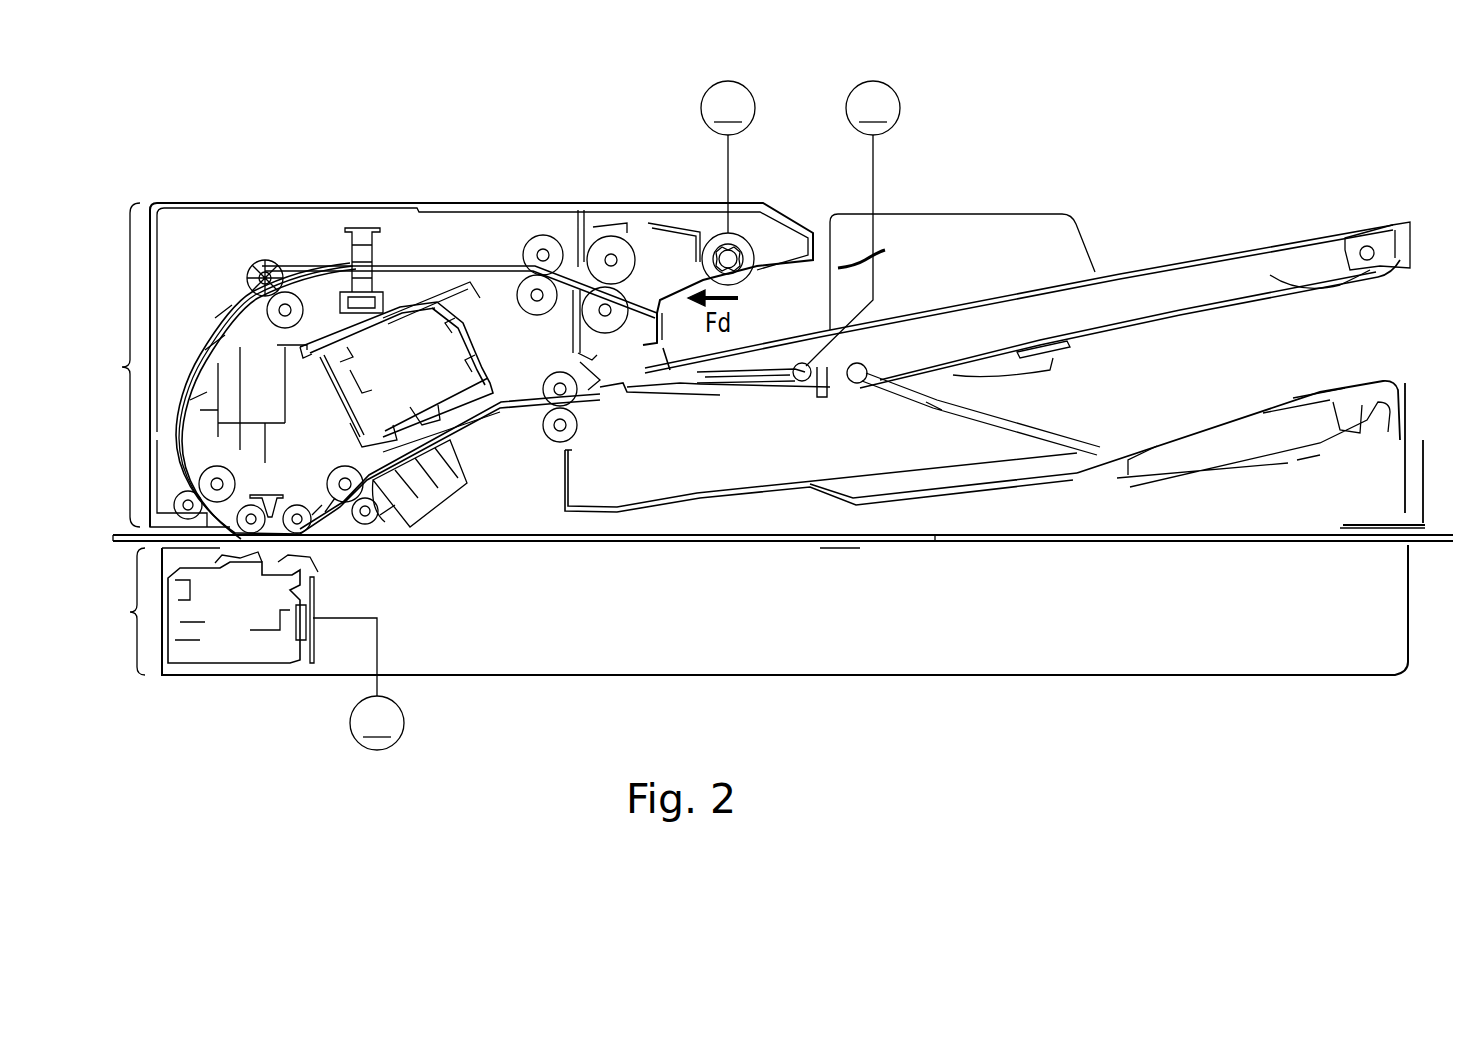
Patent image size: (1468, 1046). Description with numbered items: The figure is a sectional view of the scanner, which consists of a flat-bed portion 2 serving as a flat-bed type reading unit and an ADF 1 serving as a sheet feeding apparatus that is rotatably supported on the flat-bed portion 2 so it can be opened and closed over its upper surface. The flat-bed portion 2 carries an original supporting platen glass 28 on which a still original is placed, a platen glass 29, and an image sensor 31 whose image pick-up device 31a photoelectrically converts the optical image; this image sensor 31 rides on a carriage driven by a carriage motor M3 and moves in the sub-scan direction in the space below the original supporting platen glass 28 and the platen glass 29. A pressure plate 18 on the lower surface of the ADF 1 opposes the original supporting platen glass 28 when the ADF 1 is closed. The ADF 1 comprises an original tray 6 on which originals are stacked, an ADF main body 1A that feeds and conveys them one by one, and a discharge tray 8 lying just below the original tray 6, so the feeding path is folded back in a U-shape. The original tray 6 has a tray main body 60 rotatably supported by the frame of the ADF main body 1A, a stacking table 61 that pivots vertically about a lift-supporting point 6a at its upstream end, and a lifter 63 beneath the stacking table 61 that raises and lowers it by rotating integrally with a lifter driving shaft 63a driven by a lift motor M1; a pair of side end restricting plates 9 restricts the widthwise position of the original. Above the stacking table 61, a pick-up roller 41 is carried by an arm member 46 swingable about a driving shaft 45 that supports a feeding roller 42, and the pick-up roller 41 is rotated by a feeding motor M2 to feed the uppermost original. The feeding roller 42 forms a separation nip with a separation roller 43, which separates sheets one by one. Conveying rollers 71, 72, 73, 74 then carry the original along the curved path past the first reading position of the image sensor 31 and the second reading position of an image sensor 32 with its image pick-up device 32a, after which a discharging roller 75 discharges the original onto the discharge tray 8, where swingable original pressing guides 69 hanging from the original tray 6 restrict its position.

The ADF 1 is at (119, 365).
The ADF main body 1A is at (300, 203).
The flat-bed portion 2 is at (755, 610).
The original tray 6 is at (1220, 242).
The lift-supporting point 6a is at (1362, 246).
The discharge tray 8 is at (1220, 408).
The side end restricting plates 9 is at (935, 212).
The pressure plate 18 is at (935, 541).
The original supporting platen glass 28 is at (838, 548).
The platen glass 29 is at (278, 540).
The image sensor 31 is at (245, 655).
The image pick-up device 31a is at (302, 655).
The image sensor 32 is at (418, 307).
The image pick-up device 32a is at (335, 378).
The pick-up roller 41 is at (754, 243).
The feeding roller 42 is at (622, 250).
The separation roller 43 is at (620, 319).
The driving shaft 45 is at (594, 227).
The arm member 46 is at (693, 226).
The tray main body 60 is at (1105, 345).
The stacking table 61 is at (1115, 280).
The lifter 63 is at (765, 390).
The lifter driving shaft 63a is at (806, 382).
The original pressing guides 69 is at (960, 415).
The conveying roller 71 is at (530, 302).
The conveying roller 72 is at (250, 278).
The conveying roller 73 is at (175, 506).
The conveying roller 74 is at (372, 535).
The discharging roller 75 is at (555, 445).
The lift motor M1 is at (853, 223).
The feeding motor M2 is at (728, 157).
The carriage motor M3 is at (358, 684).